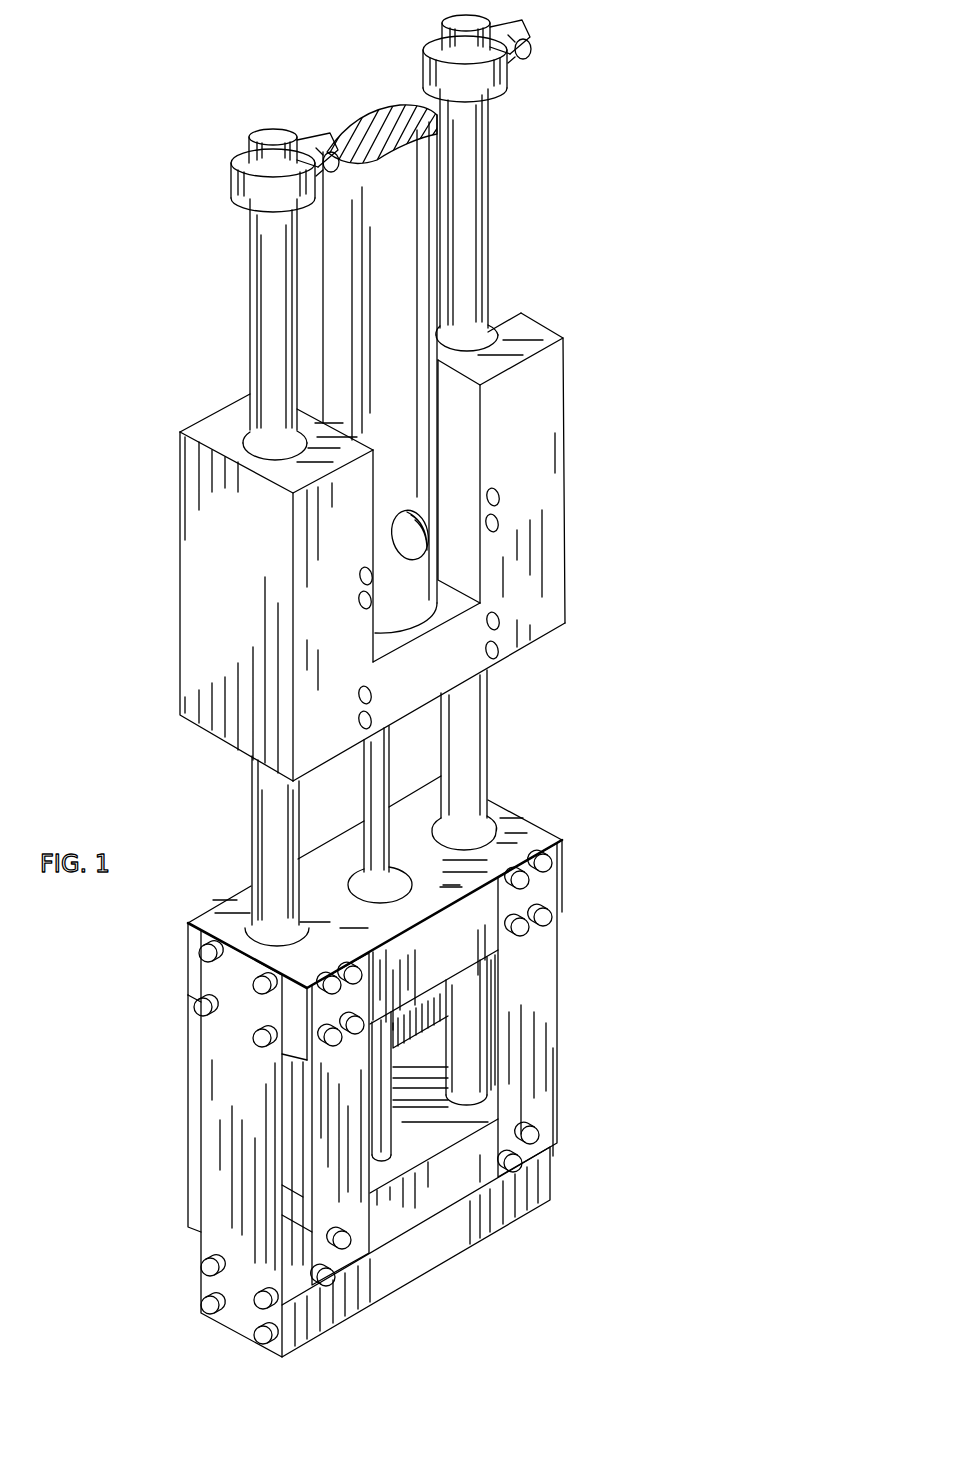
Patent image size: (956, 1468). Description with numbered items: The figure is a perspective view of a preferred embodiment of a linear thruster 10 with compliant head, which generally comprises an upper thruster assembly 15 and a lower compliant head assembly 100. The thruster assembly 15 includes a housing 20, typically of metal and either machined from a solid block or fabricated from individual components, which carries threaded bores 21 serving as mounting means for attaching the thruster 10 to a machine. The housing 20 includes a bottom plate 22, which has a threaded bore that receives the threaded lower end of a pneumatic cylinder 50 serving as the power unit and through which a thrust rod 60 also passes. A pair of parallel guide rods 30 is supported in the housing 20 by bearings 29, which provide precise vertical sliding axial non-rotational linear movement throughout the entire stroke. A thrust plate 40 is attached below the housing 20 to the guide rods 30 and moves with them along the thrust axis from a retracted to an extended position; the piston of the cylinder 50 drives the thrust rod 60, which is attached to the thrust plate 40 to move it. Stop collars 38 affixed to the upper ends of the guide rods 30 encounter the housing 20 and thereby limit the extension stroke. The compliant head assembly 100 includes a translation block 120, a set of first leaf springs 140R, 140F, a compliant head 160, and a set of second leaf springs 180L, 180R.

The linear thruster 10 is at (175, 337).
The thruster assembly 15 is at (588, 450).
The housing 20 is at (592, 549).
The threaded bores 21 is at (499, 520).
The bottom plate 22 is at (452, 668).
The bearings 29 is at (495, 325).
The guide rods 30 is at (508, 752).
The stop collars 38 is at (237, 153).
The thrust plate 40 is at (457, 1174).
The pneumatic cylinder 50 is at (396, 258).
The thrust rod 60 is at (392, 745).
The compliant head assembly 100 is at (599, 997).
The translation block 120 is at (548, 857).
The first leaf spring 140R is at (398, 797).
The first leaf spring 140F is at (548, 1072).
The compliant head 160 is at (403, 1260).
The second leaf spring 180L is at (228, 1240).
The second leaf spring 180R is at (536, 832).